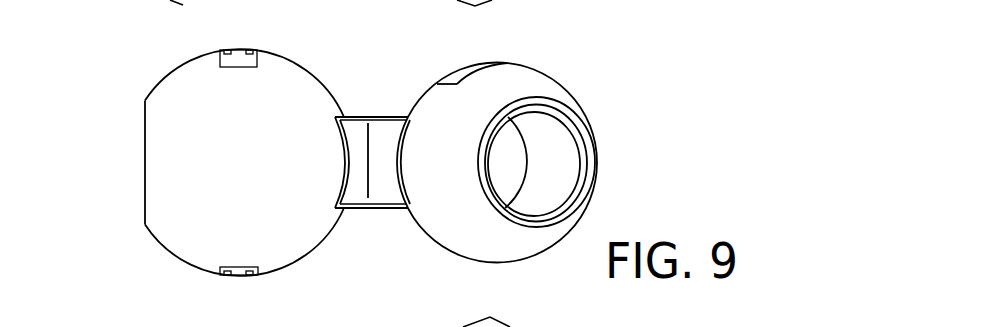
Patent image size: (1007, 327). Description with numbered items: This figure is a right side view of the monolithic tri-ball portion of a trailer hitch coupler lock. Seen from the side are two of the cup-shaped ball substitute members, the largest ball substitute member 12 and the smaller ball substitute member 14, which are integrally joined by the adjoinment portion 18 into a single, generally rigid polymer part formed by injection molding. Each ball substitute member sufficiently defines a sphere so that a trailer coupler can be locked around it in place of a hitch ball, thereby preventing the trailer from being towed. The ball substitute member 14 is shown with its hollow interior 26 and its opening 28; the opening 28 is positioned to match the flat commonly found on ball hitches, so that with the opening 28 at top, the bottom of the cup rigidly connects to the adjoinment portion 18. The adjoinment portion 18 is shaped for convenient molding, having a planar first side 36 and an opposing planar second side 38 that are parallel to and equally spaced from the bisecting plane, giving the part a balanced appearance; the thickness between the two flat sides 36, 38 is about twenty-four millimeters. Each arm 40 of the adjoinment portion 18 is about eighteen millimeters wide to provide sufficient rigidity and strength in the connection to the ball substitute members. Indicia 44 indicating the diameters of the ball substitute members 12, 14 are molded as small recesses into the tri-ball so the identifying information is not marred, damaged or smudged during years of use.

The ball substitute member 12 is at (165, 103).
The ball substitute member 14 is at (510, 85).
The adjoinment portion 18 is at (383, 182).
The hollow interior 26 is at (510, 152).
The opening 28 is at (575, 192).
The first side 36 is at (380, 116).
The second side 38 is at (362, 210).
The arm 40 is at (245, 57).
The diameters indicia 44 is at (238, 277).